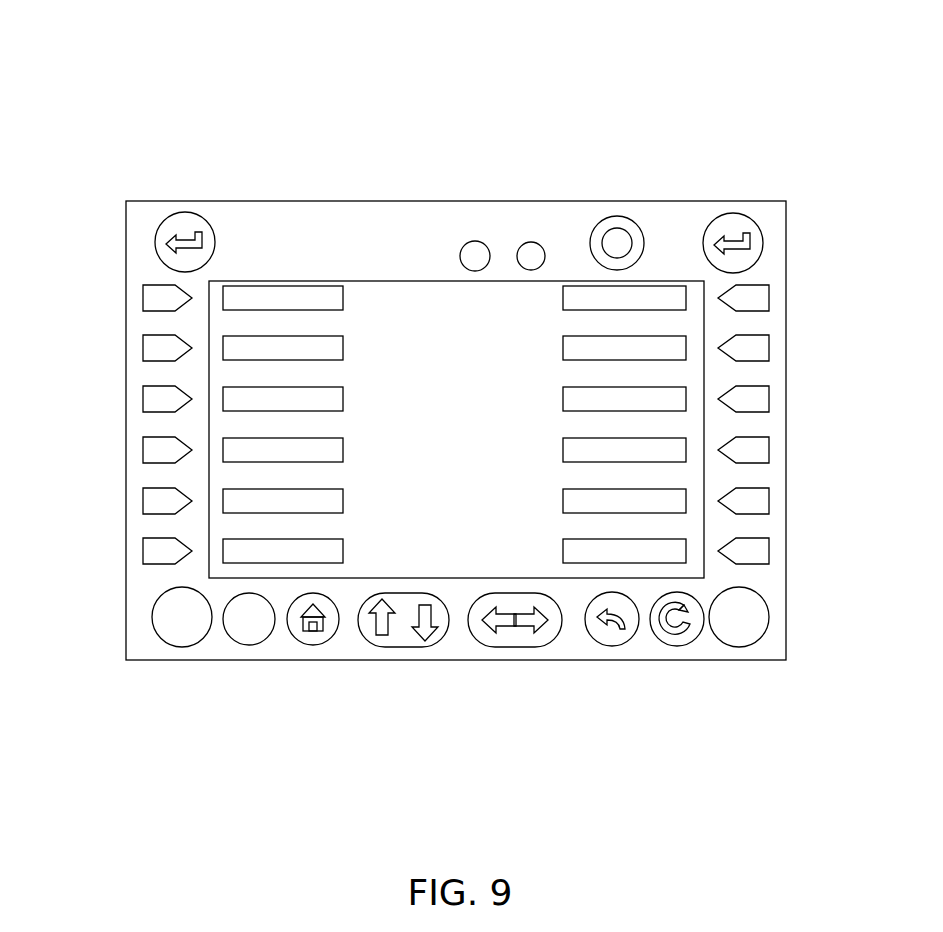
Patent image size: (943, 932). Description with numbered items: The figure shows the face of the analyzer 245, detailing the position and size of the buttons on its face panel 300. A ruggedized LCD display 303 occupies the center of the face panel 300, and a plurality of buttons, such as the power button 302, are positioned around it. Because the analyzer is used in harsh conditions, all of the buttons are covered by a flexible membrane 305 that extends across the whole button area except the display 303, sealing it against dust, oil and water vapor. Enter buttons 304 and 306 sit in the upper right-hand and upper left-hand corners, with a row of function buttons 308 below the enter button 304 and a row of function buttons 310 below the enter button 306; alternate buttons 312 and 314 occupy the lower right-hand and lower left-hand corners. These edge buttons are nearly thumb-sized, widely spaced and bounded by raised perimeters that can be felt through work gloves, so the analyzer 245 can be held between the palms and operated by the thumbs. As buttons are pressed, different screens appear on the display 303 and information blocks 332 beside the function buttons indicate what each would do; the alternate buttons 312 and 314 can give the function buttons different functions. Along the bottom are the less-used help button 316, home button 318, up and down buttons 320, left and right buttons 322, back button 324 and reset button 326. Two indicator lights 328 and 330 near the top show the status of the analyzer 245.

The analyzer 245 is at (183, 150).
The face panel 300 is at (265, 200).
The flexible membrane 305 is at (407, 233).
The display 303 is at (365, 318).
The information blocks 332 is at (560, 310).
The enter button 306 is at (155, 243).
The enter button 304 is at (762, 242).
The power button 302 is at (627, 218).
The indicator light 330 is at (470, 241).
The indicator light 328 is at (533, 242).
The function buttons 310 is at (143, 550).
The function buttons 308 is at (760, 312).
The alternate button 314 is at (156, 634).
The help button 316 is at (236, 640).
The home button 318 is at (303, 644).
The up and down buttons 320 is at (400, 647).
The left and right buttons 322 is at (515, 647).
The back button 324 is at (612, 646).
The reset button 326 is at (677, 646).
The alternate button 312 is at (760, 640).